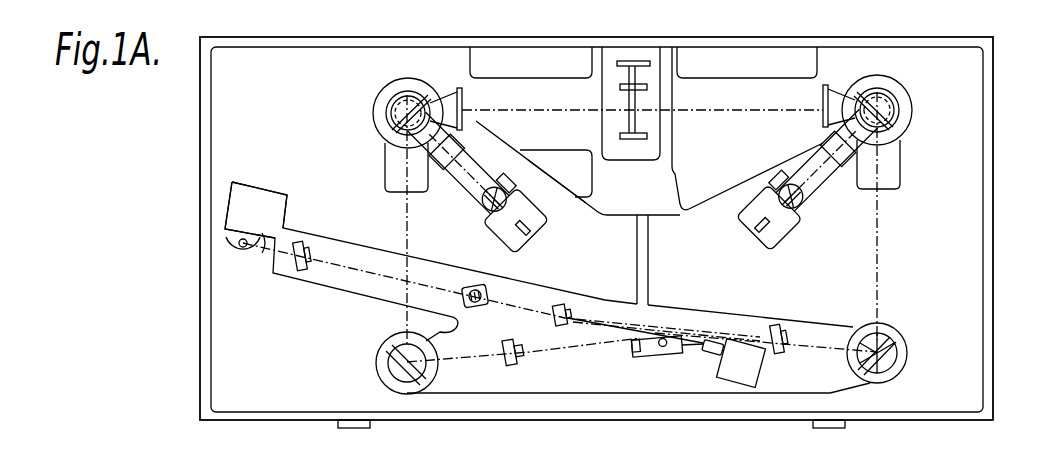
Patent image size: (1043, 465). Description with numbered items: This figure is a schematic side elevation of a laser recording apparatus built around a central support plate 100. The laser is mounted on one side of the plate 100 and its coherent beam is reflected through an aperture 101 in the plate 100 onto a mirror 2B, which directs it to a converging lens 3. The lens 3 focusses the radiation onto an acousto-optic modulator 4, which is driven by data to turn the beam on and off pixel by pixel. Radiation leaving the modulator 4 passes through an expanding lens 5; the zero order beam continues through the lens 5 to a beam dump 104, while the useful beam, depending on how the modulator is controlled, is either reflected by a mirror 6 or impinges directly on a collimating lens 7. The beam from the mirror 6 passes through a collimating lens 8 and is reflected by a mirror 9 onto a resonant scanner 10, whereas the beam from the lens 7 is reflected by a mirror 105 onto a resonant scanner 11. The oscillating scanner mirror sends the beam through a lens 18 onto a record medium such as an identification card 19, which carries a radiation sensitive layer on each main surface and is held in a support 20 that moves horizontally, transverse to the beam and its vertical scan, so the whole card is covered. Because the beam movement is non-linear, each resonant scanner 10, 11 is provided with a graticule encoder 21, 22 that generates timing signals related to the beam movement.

The central support plate 100 is at (962, 77).
The resonant scanner 10 is at (366, 95).
The resonant scanner 11 is at (928, 106).
The lens 18 is at (449, 91).
The identification card 19 is at (638, 103).
The support 20 is at (636, 140).
The graticule encoder 21 is at (452, 192).
The graticule encoder 22 is at (808, 206).
The aperture 101 is at (238, 245).
The mirror 2B is at (251, 265).
The converging lens 3 is at (302, 272).
The acousto-optic modulator 4 is at (473, 285).
The expanding lens 5 is at (563, 305).
The mirror 6 is at (640, 350).
The beam dump 104 is at (718, 342).
The collimating lens 7 is at (781, 325).
The collimating lens 8 is at (522, 365).
The mirror 9 is at (385, 372).
The mirror 105 is at (906, 347).